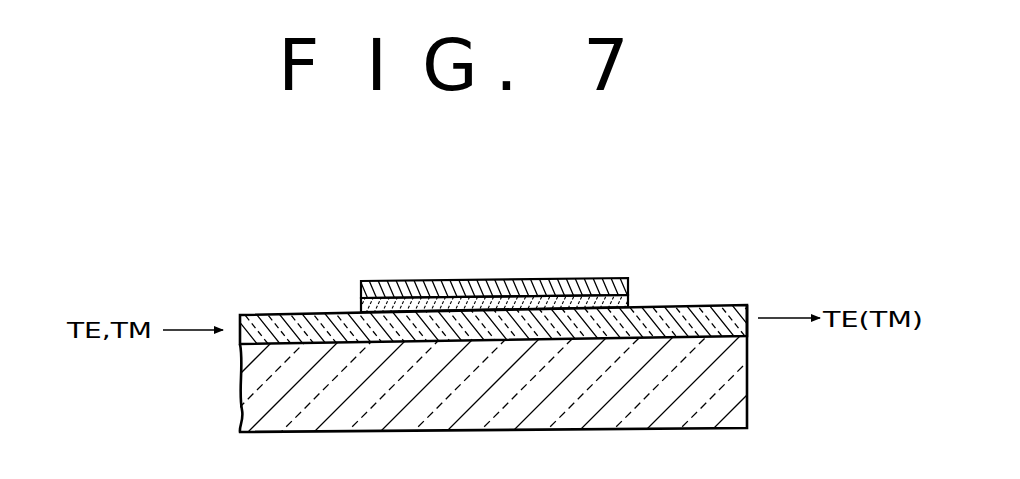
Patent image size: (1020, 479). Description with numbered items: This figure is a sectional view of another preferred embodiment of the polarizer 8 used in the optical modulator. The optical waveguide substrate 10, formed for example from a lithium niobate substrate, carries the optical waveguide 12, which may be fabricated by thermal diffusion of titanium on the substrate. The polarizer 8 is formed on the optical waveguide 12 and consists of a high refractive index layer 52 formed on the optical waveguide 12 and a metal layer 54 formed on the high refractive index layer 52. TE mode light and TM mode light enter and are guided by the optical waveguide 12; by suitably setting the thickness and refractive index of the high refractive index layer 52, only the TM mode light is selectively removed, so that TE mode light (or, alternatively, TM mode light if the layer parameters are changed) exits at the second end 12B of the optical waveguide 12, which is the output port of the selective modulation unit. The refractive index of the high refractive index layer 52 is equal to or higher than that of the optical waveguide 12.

The polarizer 8 is at (514, 255).
The optical waveguide substrate 10 is at (748, 372).
The optical waveguide 12 is at (300, 325).
The second end of the optical waveguide 12B is at (749, 312).
The high refractive index layer 52 is at (630, 300).
The metal layer 54 is at (535, 280).